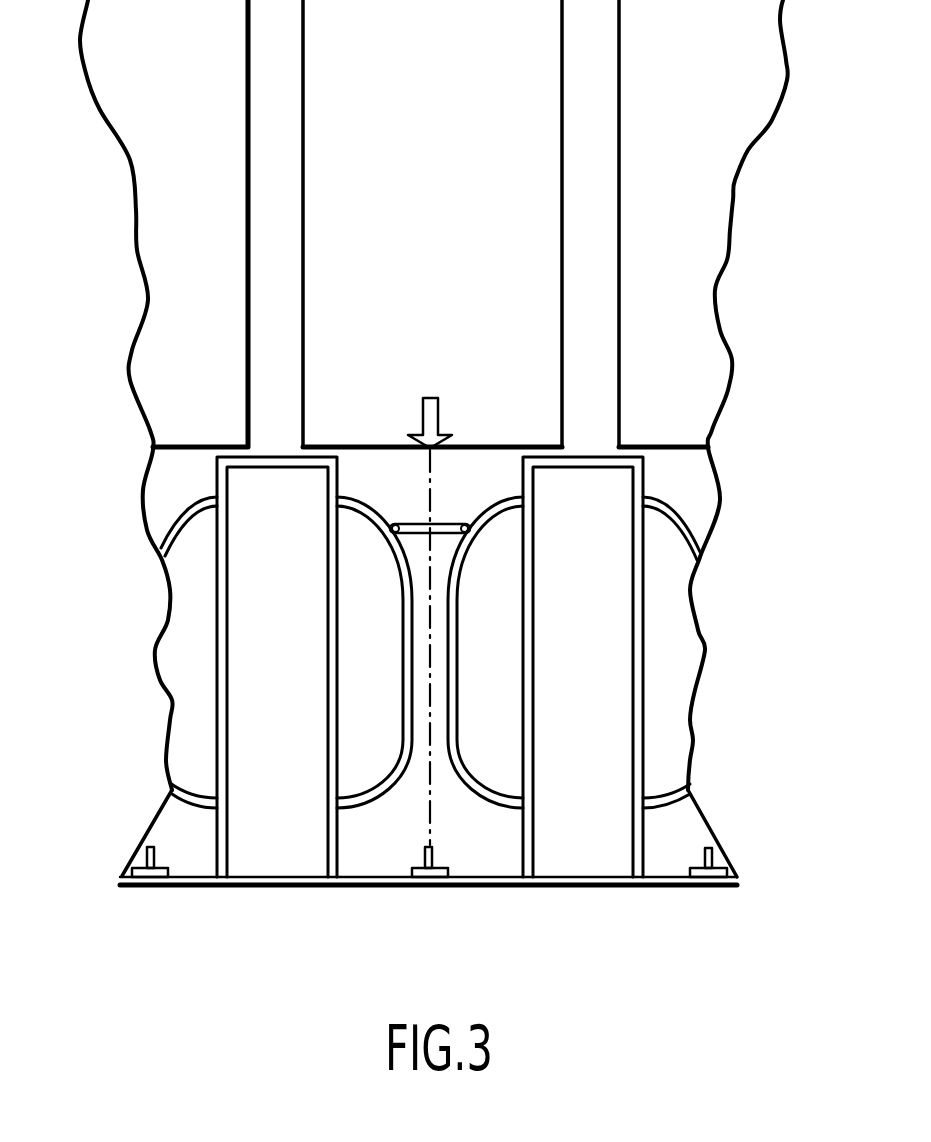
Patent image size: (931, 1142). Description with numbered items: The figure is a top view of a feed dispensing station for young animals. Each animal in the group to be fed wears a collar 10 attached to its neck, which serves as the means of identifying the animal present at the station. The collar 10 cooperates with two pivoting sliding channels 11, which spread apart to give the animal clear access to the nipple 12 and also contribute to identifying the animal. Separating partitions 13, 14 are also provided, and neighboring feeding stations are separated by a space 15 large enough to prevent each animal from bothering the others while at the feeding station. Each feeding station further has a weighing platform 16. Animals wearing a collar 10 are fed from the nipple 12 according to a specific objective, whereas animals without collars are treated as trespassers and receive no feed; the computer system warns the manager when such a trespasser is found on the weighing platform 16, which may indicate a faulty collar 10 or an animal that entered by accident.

The collar 10 is at (447, 524).
The pivoting sliding channel 11 is at (400, 640).
The nipple 12 is at (150, 877).
The separating partition 13 is at (330, 845).
The separating partition 14 is at (220, 860).
The space 15 is at (430, 718).
The weighing platform 16 is at (212, 215).